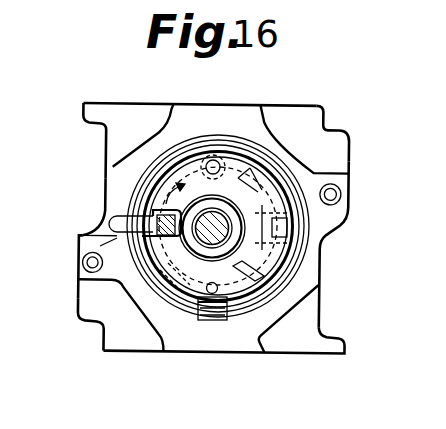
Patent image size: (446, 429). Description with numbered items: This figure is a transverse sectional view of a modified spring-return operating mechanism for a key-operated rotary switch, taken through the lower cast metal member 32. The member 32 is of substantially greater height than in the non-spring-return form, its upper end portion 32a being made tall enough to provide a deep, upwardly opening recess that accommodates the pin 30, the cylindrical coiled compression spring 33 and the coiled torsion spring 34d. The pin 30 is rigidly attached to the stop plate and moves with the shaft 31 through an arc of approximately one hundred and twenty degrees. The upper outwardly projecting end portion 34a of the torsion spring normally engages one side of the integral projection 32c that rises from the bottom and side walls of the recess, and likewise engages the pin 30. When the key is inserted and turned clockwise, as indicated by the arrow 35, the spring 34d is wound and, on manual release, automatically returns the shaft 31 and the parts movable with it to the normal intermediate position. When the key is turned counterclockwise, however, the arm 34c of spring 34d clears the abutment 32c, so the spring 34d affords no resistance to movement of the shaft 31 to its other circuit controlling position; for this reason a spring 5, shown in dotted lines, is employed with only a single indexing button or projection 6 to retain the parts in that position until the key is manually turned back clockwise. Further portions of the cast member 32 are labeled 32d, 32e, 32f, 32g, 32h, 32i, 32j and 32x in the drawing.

The spring 5 is at (187, 153).
The indexing button or projection 6 is at (217, 157).
The pin 30 is at (117, 240).
The shaft 31 is at (218, 224).
The lower cast metal member 32 is at (322, 305).
The upper end portion 32a is at (252, 308).
The integral projection 32c is at (153, 212).
The housing corner lug 32d is at (100, 103).
The housing corner lug 32e is at (127, 350).
The housing corner lug 32f is at (348, 158).
The housing corner lug 32g is at (79, 303).
The housing boss 32h is at (96, 228).
The housing slot 32i is at (222, 320).
The housing recess 32j is at (288, 230).
The housing rib 32x is at (186, 335).
The cylindrical coiled compression spring 33 is at (290, 262).
The upper outwardly projecting end portion 34a is at (100, 246).
The arm 34c is at (165, 197).
The spring 34d is at (285, 244).
The arrow 35 is at (150, 184).